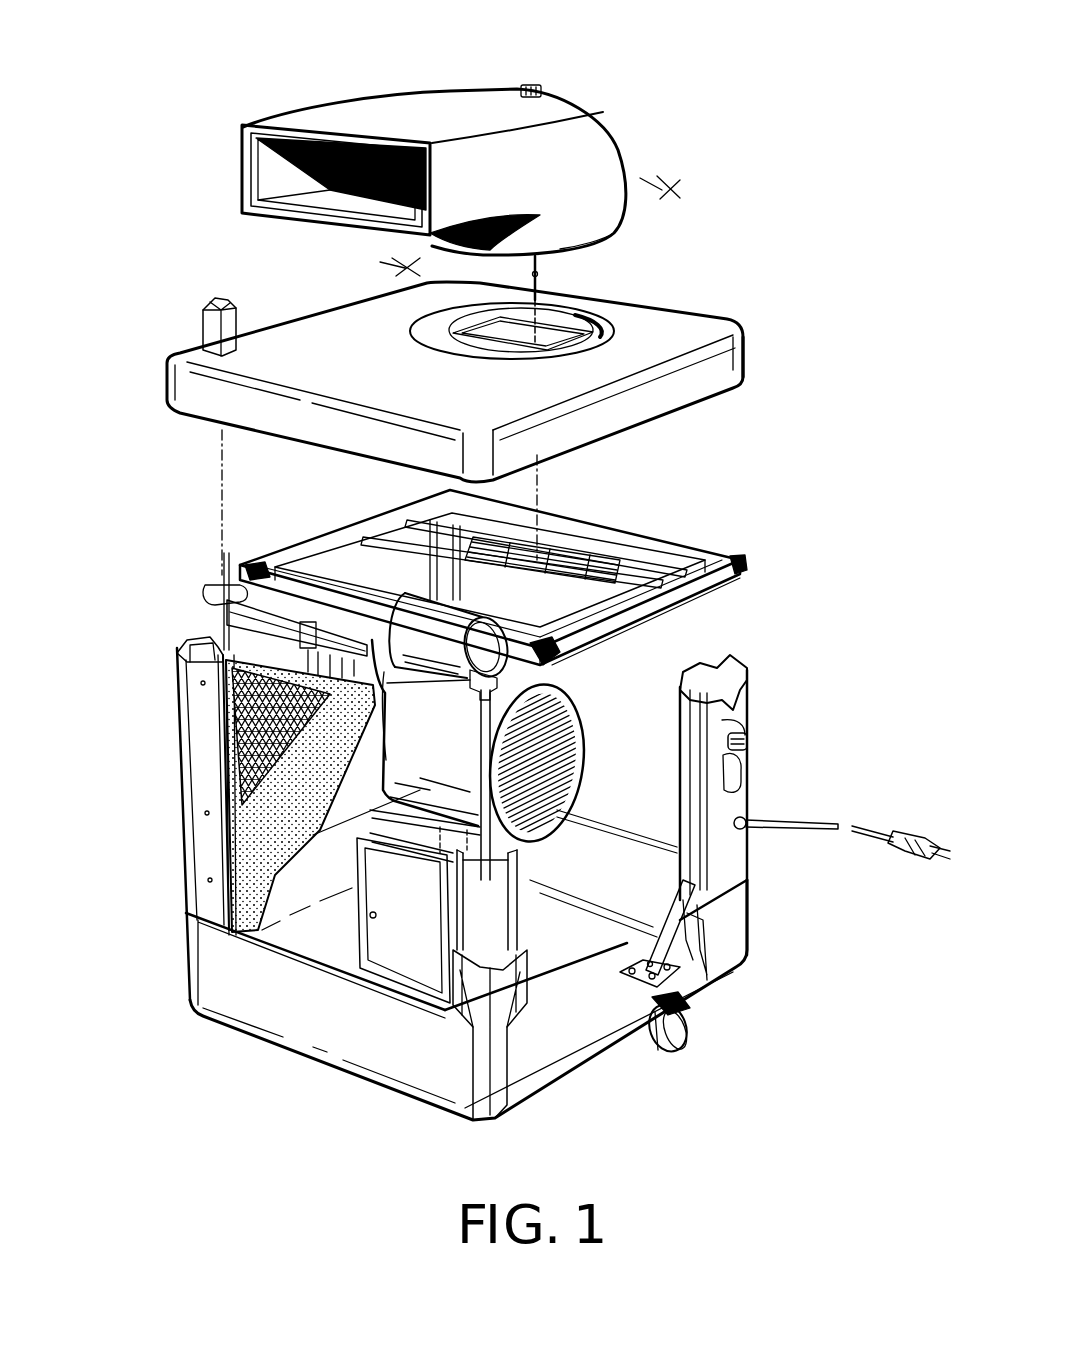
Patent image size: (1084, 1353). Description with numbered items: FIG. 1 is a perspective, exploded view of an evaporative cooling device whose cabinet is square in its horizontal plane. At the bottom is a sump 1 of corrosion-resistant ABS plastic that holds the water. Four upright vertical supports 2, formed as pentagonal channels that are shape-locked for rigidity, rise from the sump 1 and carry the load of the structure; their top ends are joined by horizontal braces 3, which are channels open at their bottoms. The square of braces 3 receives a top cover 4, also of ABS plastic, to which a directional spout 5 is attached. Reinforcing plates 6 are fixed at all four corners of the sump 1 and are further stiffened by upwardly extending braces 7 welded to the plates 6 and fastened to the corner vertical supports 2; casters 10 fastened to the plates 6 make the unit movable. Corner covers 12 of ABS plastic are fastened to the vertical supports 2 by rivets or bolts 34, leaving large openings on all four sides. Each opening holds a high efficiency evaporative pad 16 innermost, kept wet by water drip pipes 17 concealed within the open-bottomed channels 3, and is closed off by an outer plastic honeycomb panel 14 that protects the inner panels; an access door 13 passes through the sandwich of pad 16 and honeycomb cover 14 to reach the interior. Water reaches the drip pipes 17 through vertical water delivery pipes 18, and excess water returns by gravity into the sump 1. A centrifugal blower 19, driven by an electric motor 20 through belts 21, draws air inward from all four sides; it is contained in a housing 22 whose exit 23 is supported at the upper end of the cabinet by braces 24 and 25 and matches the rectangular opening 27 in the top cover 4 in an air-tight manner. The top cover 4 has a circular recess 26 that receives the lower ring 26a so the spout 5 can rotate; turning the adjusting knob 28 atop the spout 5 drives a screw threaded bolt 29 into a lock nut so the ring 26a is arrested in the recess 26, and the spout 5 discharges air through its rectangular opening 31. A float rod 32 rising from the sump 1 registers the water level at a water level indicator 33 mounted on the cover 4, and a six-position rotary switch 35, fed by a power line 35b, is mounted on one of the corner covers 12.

The sump 1 is at (257, 1003).
The vertical supports 2 is at (363, 523).
The horizontal braces 3 is at (307, 550).
The top cover 4 is at (308, 373).
The directional spout 5 is at (508, 188).
The reinforcing plates 6 is at (672, 982).
The upwardly extending braces 7 is at (667, 940).
The casters 10 is at (665, 1052).
The corner covers 12 is at (190, 696).
The access door 13 is at (386, 938).
The outer plastic honeycomb panel 14 is at (222, 765).
The evaporative pad 16 is at (232, 862).
The water drip pipes 17 is at (358, 640).
The vertical water delivery pipes 18 is at (492, 882).
The centrifugal blower 19 is at (421, 741).
The electric motor 20 is at (414, 642).
The belts 21 is at (386, 685).
The housing 22 is at (586, 684).
The exit 23 is at (607, 528).
The brace 24 is at (427, 521).
The brace 25 is at (668, 556).
The circular recess 26 is at (428, 328).
The lower ring 26a is at (598, 250).
The rectangular opening 27 is at (748, 354).
The adjusting knob 28 is at (534, 86).
The screw threaded bolt 29 is at (540, 268).
The rectangular opening 31 is at (276, 185).
The float rod 32 is at (222, 582).
The water level indicator 33 is at (202, 317).
The rivets or bolts 34 is at (205, 745).
The six-position rotary switch 35 is at (748, 745).
The power line 35b is at (803, 830).